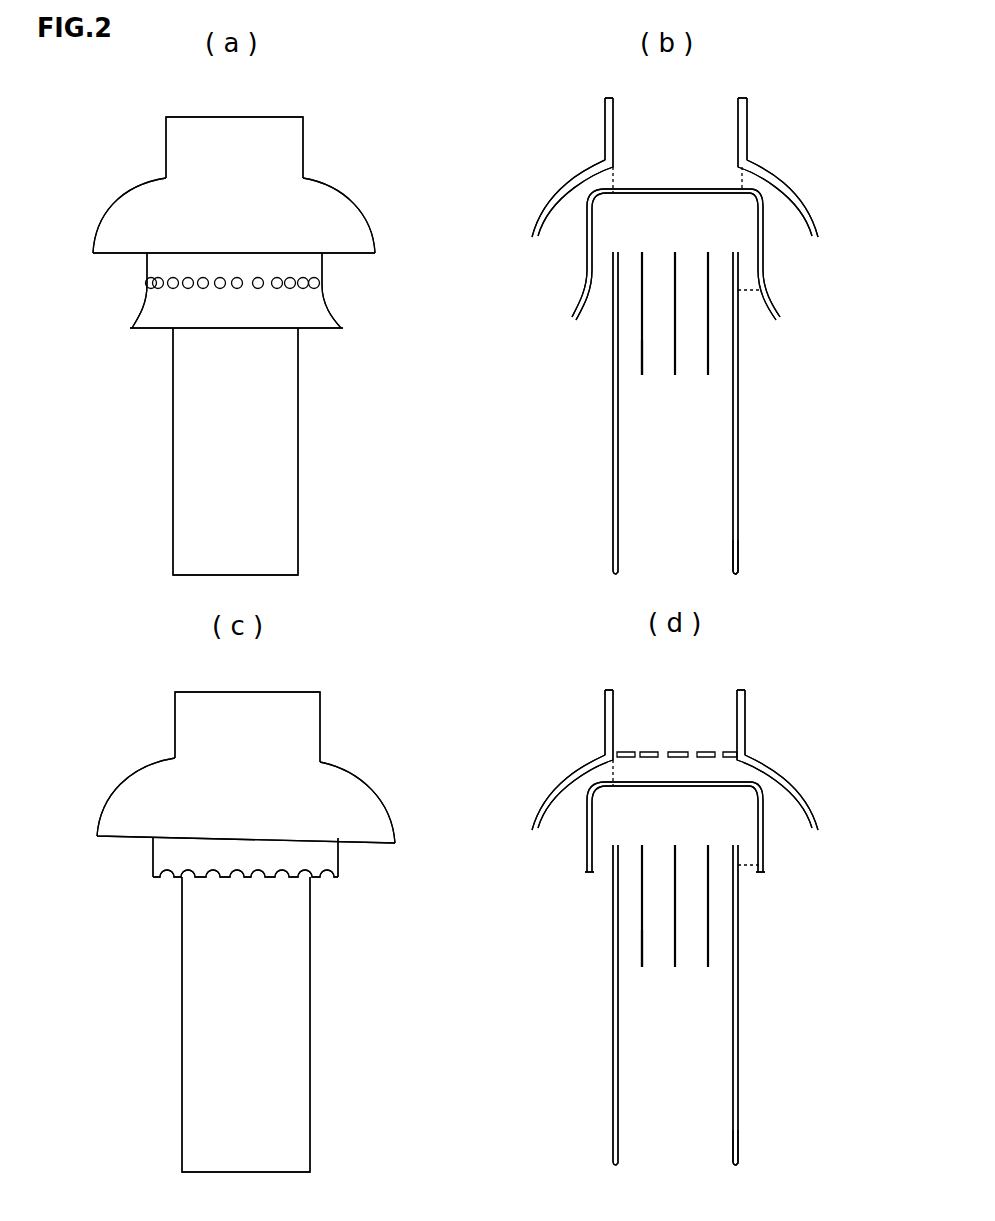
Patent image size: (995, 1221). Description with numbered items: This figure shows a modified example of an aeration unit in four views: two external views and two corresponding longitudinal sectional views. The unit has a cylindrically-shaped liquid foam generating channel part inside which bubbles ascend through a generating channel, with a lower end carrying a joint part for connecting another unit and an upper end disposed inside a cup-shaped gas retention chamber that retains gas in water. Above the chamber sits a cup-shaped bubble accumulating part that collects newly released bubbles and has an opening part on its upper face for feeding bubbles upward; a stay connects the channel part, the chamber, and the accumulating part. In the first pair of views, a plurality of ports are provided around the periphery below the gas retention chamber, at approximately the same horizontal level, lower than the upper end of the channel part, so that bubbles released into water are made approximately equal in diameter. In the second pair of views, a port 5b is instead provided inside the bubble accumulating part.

The port 5b is at (723, 747).